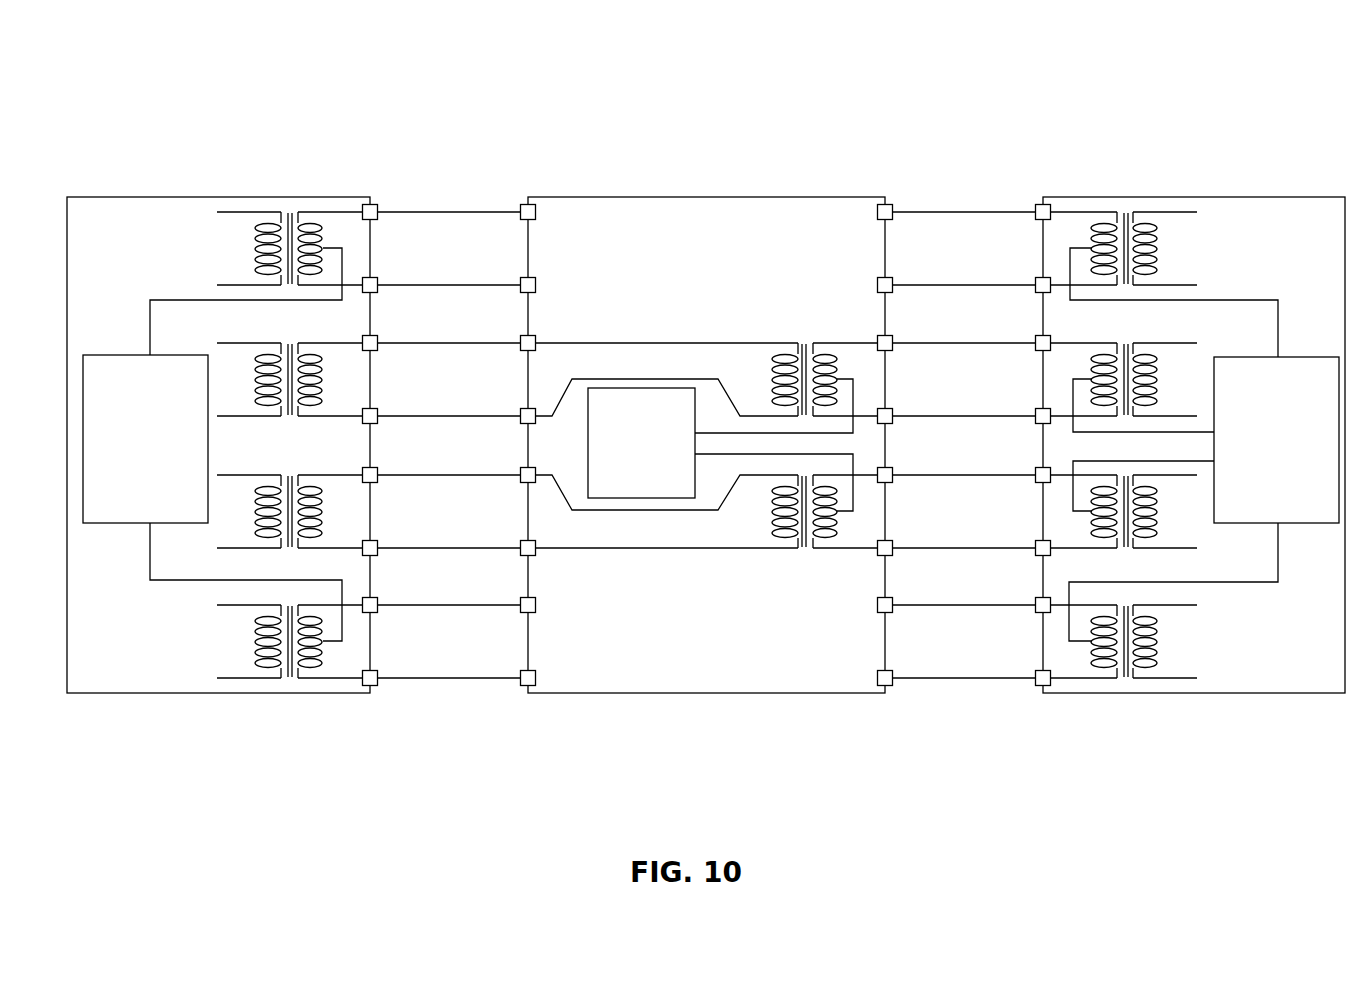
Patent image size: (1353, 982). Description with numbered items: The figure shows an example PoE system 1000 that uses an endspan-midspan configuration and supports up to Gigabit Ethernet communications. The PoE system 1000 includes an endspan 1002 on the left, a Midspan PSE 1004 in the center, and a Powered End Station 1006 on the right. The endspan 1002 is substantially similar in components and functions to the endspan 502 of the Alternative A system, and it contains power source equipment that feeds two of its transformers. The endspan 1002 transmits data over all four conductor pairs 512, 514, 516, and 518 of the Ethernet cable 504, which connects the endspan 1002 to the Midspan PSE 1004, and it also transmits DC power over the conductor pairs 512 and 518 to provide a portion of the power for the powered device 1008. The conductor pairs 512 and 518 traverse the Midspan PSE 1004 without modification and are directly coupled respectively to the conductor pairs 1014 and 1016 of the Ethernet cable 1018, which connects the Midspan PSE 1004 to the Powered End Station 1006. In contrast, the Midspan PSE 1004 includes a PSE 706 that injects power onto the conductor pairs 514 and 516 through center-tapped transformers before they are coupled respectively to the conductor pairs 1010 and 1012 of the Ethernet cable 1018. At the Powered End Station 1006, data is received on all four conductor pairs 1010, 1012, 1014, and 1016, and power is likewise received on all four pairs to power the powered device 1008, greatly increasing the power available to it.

The PoE system 1000 is at (1259, 90).
The endspan 1002 is at (263, 693).
The Midspan PSE 1004 is at (670, 693).
The Powered End Station 1006 is at (1212, 693).
The powered device 1008 is at (1302, 357).
The endspan 502 is at (112, 355).
The PSE 706 is at (588, 418).
The Ethernet cable 504 is at (450, 90).
The conductor pair 512 is at (441, 203).
The conductor pair 514 is at (440, 335).
The conductor pair 516 is at (441, 468).
The conductor pair 518 is at (441, 598).
The Ethernet cable 1018 is at (894, 93).
The conductor pair 1014 is at (950, 204).
The conductor pair 1010 is at (955, 341).
The conductor pair 1012 is at (955, 468).
The conductor pair 1016 is at (955, 596).